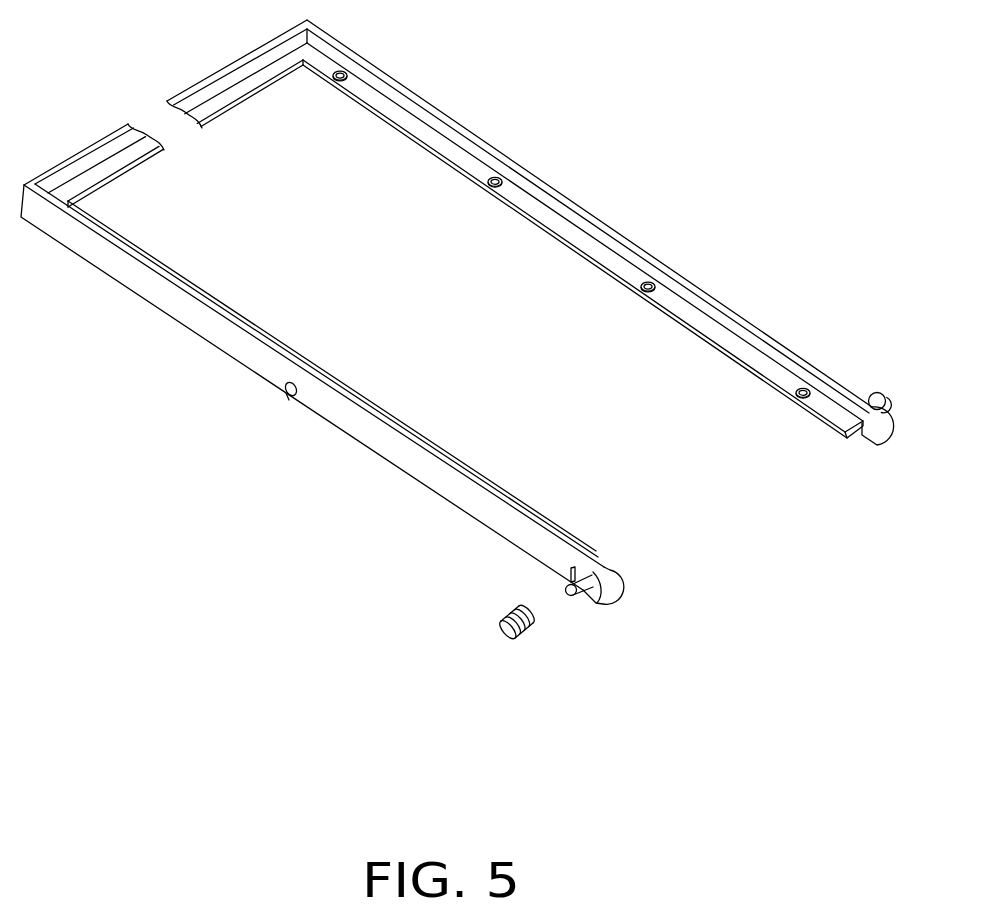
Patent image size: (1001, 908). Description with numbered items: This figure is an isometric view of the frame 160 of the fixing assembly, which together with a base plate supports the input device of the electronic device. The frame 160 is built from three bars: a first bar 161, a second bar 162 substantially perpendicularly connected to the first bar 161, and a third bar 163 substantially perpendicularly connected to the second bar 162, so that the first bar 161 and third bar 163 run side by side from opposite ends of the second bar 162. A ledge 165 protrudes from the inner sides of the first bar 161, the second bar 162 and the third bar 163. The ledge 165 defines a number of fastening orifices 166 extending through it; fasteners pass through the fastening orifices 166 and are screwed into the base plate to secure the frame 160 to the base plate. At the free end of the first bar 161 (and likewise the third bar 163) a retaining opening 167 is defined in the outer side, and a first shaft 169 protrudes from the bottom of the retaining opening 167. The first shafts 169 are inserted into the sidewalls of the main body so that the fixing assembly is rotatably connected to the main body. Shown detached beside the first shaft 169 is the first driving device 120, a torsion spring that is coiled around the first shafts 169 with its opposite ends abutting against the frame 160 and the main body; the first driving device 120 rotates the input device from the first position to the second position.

The frame 160 is at (417, 86).
The first bar 161 is at (185, 315).
The second bar 162 is at (193, 90).
The third bar 163 is at (570, 201).
The ledge 165 is at (690, 313).
The fastening orifices 166 is at (497, 177).
The retaining opening 167 is at (578, 567).
The first shaft 169 is at (566, 589).
The first driving device 120 is at (508, 615).